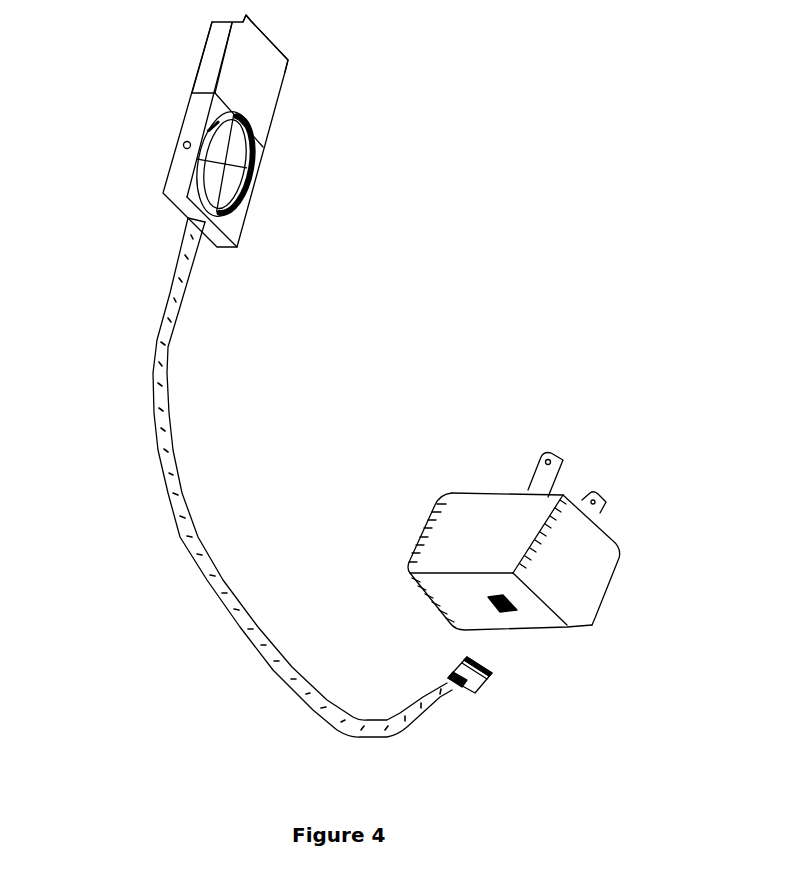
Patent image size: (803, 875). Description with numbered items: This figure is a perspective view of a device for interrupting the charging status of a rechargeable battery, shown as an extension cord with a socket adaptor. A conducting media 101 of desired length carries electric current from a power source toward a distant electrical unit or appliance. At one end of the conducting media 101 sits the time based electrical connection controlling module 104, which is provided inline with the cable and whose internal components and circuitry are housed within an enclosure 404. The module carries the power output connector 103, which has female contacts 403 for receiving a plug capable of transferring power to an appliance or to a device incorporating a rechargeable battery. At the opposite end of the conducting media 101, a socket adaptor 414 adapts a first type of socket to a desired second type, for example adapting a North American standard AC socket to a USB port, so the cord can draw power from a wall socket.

The conducting media 101 is at (182, 542).
The power output connector 103 is at (332, 54).
The female contacts 403 is at (287, 43).
The electrical connection controlling module 104 is at (248, 131).
The enclosure 404 is at (248, 131).
The socket adaptor 414 is at (492, 478).